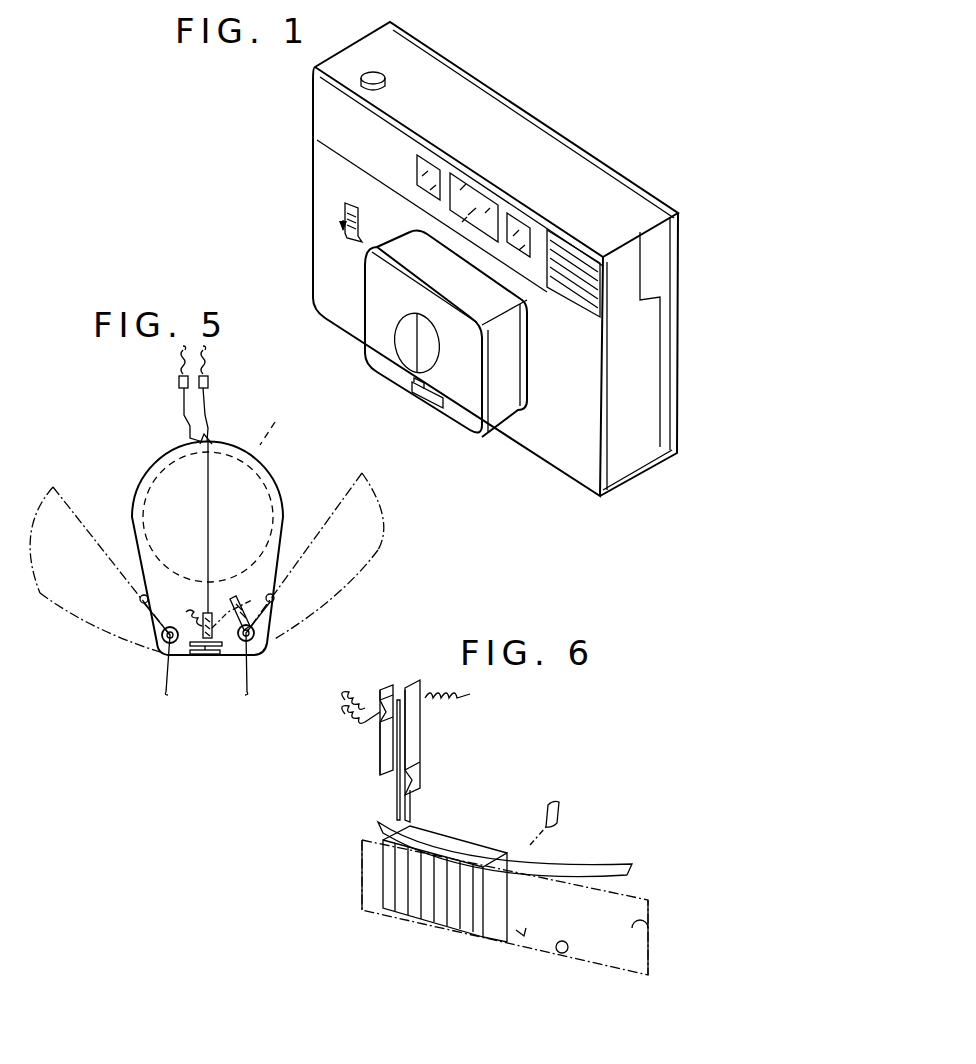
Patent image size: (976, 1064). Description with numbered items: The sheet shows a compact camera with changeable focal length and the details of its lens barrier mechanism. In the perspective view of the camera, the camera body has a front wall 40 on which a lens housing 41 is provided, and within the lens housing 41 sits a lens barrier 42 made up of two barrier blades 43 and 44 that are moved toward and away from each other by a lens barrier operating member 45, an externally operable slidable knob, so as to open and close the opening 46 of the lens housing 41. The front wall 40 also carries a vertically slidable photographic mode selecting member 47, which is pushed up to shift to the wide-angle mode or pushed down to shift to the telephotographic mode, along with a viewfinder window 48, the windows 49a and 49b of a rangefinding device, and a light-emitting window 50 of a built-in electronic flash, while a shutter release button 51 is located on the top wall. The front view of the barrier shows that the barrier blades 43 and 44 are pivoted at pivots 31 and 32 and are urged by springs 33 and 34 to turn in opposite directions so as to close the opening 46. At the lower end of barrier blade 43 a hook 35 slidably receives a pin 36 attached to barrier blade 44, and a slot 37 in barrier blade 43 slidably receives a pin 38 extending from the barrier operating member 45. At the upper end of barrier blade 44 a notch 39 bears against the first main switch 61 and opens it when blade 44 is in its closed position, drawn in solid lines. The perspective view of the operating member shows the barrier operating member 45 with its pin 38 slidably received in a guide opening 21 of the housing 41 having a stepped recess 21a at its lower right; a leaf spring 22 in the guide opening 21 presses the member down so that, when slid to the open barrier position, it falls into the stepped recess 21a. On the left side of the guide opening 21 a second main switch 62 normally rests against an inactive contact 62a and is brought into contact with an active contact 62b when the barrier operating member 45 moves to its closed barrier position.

In FIG. 1, the front wall 40 is at (530, 442).
In FIG. 1, the lens housing 41 is at (488, 420).
In FIG. 1, the lens barrier 42 is at (395, 410).
In FIG. 1, the barrier blade 43 is at (430, 357).
In FIG. 5, the barrier blade 43 is at (280, 475).
In FIG. 1, the barrier blade 44 is at (402, 342).
In FIG. 5, the barrier blade 44 is at (148, 465).
In FIG. 1, the lens barrier operating member 45 is at (416, 398).
In FIG. 6, the lens barrier operating member 45 is at (406, 915).
In FIG. 1, the opening 46 is at (428, 338).
In FIG. 5, the opening 46 is at (275, 425).
In FIG. 1, the photographic mode selecting member 47 is at (343, 213).
In FIG. 1, the viewfinder window 48 is at (478, 198).
In FIG. 1, the window of rangefinding device 49a is at (520, 224).
In FIG. 1, the window of rangefinding device 49b is at (433, 168).
In FIG. 1, the light-emitting window 50 is at (575, 285).
In FIG. 1, the shutter release button 51 is at (380, 80).
In FIG. 5, the pivot 31 is at (252, 650).
In FIG. 5, the pivot 32 is at (162, 633).
In FIG. 5, the spring 33 is at (250, 688).
In FIG. 5, the spring 34 is at (165, 675).
In FIG. 5, the hook 35 is at (214, 655).
In FIG. 5, the pin 36 is at (200, 656).
In FIG. 5, the slot 37 is at (236, 594).
In FIG. 5, the pin 38 is at (268, 612).
In FIG. 6, the pin 38 is at (555, 802).
In FIG. 5, the notch 39 is at (212, 440).
In FIG. 5, the first main switch 61 is at (172, 408).
In FIG. 6, the second main switch 62 is at (432, 728).
In FIG. 6, the inactive contact 62a is at (422, 773).
In FIG. 6, the active contact 62b is at (380, 768).
In FIG. 6, the guide opening 21 is at (652, 938).
In FIG. 6, the stepped recess 21a is at (562, 970).
In FIG. 6, the leaf spring 22 is at (594, 865).